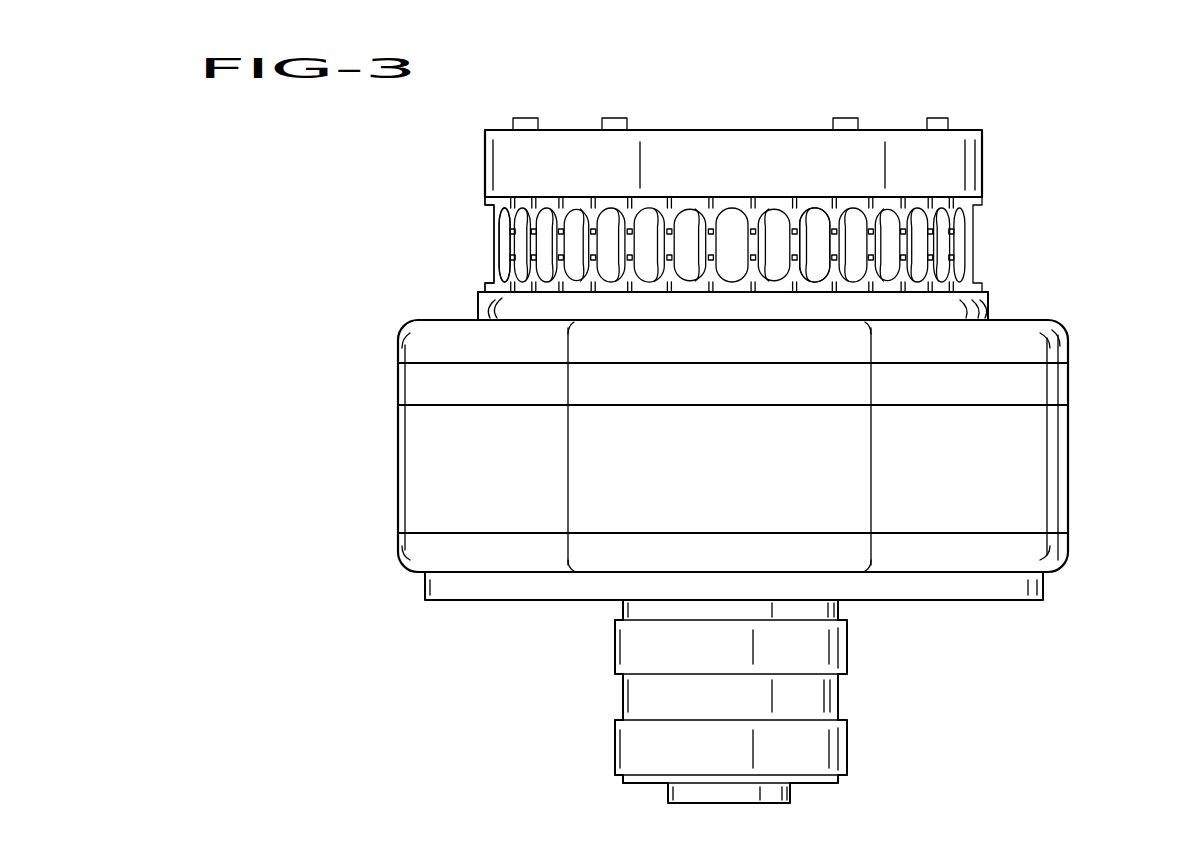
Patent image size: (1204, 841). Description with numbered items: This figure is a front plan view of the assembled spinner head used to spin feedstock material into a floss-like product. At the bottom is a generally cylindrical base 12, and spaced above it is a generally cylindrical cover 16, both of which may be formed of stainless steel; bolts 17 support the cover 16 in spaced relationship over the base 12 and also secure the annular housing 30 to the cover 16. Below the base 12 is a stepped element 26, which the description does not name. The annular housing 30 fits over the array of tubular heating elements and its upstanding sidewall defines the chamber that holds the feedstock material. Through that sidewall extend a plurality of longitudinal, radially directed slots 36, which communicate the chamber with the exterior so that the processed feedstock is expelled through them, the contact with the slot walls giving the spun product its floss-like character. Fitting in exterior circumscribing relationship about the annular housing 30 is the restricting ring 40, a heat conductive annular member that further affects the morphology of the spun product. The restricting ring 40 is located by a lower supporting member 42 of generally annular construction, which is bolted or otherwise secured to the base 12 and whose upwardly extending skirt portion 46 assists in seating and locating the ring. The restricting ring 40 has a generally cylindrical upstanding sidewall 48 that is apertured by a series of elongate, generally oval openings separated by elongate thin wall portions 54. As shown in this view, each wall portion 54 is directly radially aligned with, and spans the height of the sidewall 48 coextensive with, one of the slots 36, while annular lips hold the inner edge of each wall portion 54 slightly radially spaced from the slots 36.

The base 12 is at (1055, 460).
The cover 16 is at (972, 160).
The bolts 17 is at (937, 118).
The hub shaft 26 is at (828, 698).
The annular housing 30 is at (600, 207).
The slots 36 is at (668, 210).
The restricting ring 40 is at (972, 292).
The lower supporting member 42 is at (1055, 385).
The skirt portion 46 is at (487, 297).
The sidewall 48 is at (497, 272).
The wall portions 54 is at (796, 208).